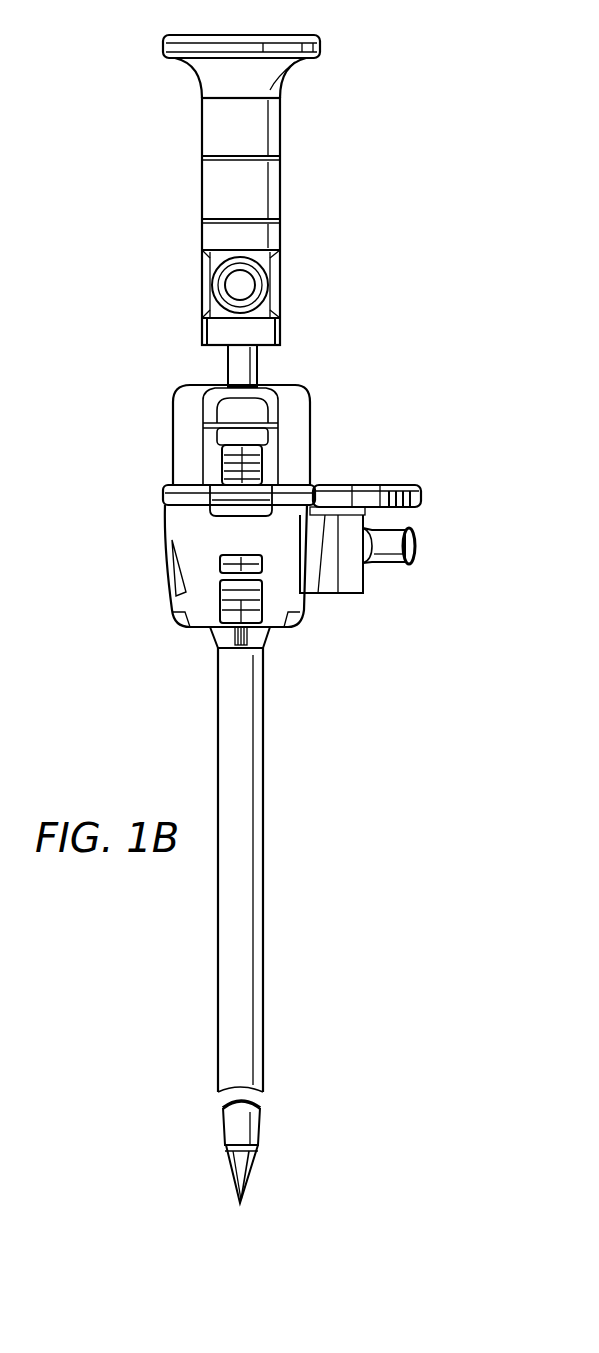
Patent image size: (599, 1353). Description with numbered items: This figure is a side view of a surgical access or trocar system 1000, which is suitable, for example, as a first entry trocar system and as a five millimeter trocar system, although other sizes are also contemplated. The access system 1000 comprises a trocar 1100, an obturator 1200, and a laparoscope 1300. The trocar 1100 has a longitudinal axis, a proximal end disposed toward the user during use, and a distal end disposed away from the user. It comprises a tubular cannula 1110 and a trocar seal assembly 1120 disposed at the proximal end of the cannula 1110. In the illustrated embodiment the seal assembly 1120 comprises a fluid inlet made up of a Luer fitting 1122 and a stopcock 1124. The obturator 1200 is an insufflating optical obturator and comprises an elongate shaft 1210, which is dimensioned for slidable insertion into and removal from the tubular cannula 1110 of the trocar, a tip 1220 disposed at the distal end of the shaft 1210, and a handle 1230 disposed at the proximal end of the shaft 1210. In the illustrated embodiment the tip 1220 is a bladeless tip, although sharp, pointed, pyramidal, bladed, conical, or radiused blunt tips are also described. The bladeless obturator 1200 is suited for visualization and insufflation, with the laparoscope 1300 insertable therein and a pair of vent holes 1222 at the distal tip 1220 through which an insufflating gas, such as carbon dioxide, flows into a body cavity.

The surgical access system 1000 is at (147, 143).
The laparoscope 1300 is at (280, 172).
The handle 1230 is at (308, 400).
The trocar 1100 is at (180, 618).
The trocar seal assembly 1120 is at (185, 555).
The stopcock 1124 is at (353, 487).
The Luer fitting 1122 is at (412, 565).
The tubular cannula 1110 is at (264, 958).
The obturator 1200 is at (258, 1130).
The elongate shaft 1210 is at (224, 1132).
The tip 1220 is at (235, 1172).
The vent hole 1222 is at (250, 1180).